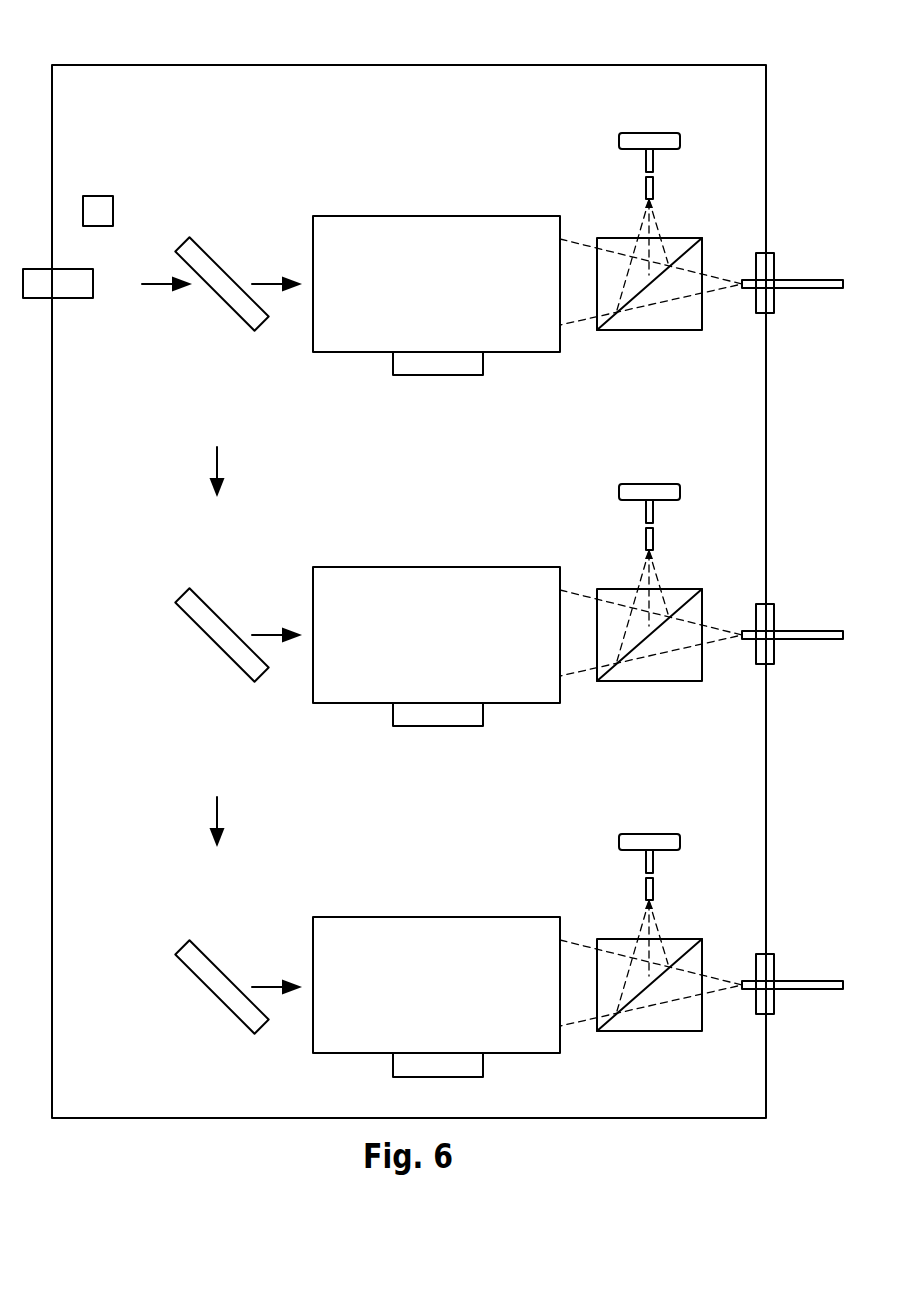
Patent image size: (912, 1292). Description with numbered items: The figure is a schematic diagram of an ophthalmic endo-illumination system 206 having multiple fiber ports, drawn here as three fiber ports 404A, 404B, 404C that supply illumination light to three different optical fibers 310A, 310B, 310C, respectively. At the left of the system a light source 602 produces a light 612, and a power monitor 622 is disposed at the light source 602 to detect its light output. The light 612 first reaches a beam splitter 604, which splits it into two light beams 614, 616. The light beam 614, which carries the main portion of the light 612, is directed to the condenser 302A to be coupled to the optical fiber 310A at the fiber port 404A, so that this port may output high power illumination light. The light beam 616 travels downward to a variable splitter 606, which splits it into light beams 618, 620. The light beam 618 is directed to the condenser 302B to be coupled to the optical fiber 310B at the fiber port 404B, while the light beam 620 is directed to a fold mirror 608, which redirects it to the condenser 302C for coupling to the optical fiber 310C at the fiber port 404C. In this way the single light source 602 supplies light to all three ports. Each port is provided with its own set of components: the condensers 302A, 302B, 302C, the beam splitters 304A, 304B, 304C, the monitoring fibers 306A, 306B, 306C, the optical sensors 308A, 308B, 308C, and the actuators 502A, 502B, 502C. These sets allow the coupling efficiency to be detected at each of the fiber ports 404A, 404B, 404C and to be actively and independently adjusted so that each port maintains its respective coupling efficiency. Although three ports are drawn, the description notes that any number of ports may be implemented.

The ophthalmic endo-illumination system 206 is at (306, 60).
The light source 602 is at (75, 298).
The power monitor 622 is at (97, 196).
The light 612 is at (160, 283).
The beam splitter 604 is at (218, 262).
The light beam 614 is at (272, 283).
The light beam 616 is at (215, 467).
The variable splitter 606 is at (215, 645).
The light beam 618 is at (268, 632).
The light beam 620 is at (215, 812).
The fold mirror 608 is at (215, 997).
The condenser 302A is at (433, 216).
The condenser 302B is at (433, 567).
The condenser 302C is at (433, 917).
The actuator 502A is at (393, 362).
The actuator 502B is at (393, 713).
The actuator 502C is at (393, 1063).
The beam splitter 304A is at (652, 330).
The beam splitter 304B is at (652, 681).
The beam splitter 304C is at (652, 1031).
The monitoring fiber 306A is at (655, 188).
The monitoring fiber 306B is at (655, 539).
The monitoring fiber 306C is at (655, 889).
The optical sensor 308A is at (654, 133).
The optical sensor 308B is at (654, 484).
The optical sensor 308C is at (654, 834).
The optical fiber 310A is at (808, 280).
The optical fiber 310B is at (808, 631).
The optical fiber 310C is at (808, 981).
The fiber port 404A is at (775, 303).
The fiber port 404B is at (775, 654).
The fiber port 404C is at (775, 1004).